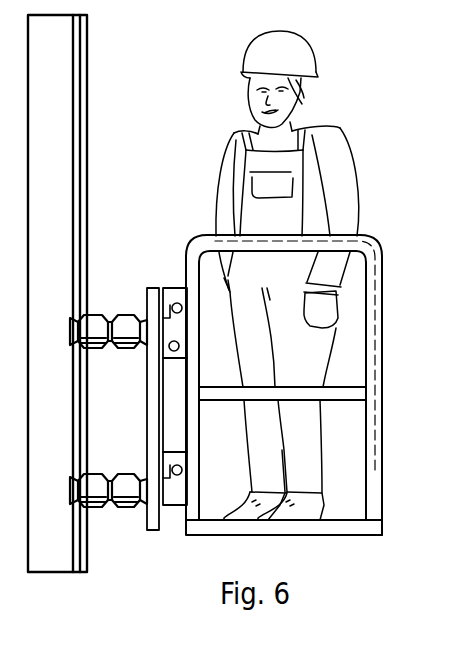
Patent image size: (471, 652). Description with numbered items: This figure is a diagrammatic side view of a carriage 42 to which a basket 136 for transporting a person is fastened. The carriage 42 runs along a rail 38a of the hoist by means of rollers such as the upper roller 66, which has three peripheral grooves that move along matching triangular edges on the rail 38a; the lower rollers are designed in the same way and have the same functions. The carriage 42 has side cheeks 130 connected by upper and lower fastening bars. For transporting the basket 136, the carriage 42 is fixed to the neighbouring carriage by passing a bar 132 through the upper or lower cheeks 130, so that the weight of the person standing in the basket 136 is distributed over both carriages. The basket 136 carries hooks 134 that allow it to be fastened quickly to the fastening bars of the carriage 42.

The rail 38a is at (85, 112).
The upper roller 66 is at (96, 318).
The carriage 42 is at (153, 531).
The hook 134 is at (170, 287).
The side cheek 130 is at (167, 332).
The bar 132 is at (174, 352).
The basket 136 is at (372, 259).